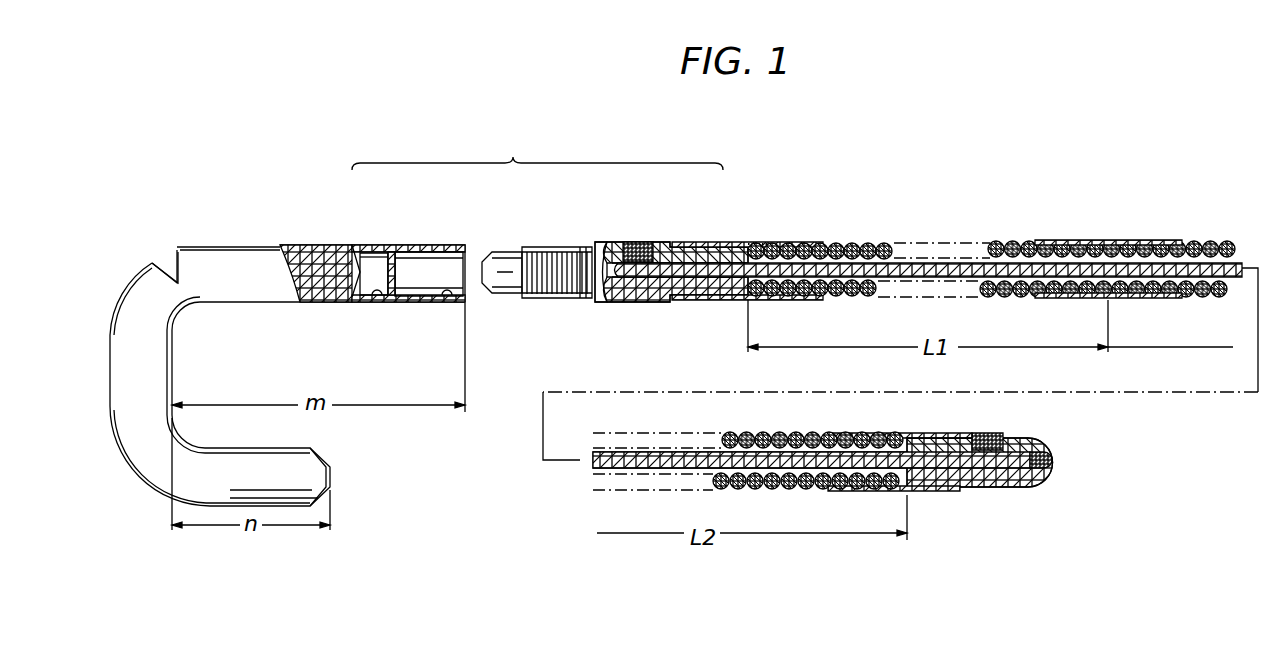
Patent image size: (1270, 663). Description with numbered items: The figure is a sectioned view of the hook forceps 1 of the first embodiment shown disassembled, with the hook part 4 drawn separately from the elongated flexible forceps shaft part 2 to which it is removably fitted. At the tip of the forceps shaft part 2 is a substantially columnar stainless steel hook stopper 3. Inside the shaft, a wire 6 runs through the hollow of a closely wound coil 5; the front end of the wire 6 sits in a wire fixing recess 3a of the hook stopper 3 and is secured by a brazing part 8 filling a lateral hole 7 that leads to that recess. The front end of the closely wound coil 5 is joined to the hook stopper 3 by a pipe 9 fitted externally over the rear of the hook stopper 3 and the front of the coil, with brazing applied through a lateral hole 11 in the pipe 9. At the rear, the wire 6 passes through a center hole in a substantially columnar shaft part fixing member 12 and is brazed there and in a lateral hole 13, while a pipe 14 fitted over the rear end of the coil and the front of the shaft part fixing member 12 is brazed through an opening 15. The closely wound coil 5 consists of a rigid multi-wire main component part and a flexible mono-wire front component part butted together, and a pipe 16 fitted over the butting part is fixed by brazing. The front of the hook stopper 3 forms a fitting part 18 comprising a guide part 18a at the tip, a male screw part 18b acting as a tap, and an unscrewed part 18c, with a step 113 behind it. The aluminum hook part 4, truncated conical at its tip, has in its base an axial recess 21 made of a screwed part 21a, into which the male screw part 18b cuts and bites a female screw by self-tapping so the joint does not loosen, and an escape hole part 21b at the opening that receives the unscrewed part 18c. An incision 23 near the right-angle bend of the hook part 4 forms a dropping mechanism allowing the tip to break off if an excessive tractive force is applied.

The hook forceps 1 is at (537, 151).
The forceps shaft part 2 is at (704, 243).
The hook stopper 3 is at (648, 301).
The wire fixing recess 3a is at (720, 268).
The hook part 4 is at (336, 245).
The closely wound coil 5 is at (878, 249).
The wire 6 is at (900, 272).
The lateral hole 7 is at (629, 243).
The brazing part 8 is at (651, 243).
The pipe 9 is at (797, 297).
The lateral hole 11 is at (768, 244).
The shaft part fixing member 12 is at (1004, 480).
The lateral hole 13 is at (995, 434).
The pipe 14 is at (940, 491).
The opening 15 is at (915, 438).
The pipe 16 is at (1166, 297).
The fitting part 18 is at (538, 315).
The guide part 18a is at (510, 295).
The male screw part 18b is at (548, 298).
The unscrewed part 18c is at (584, 300).
The recess 21 is at (453, 351).
The screwed part 21a is at (374, 293).
The escape hole part 21b is at (447, 295).
The incision 23 is at (176, 252).
The step 113 is at (600, 290).